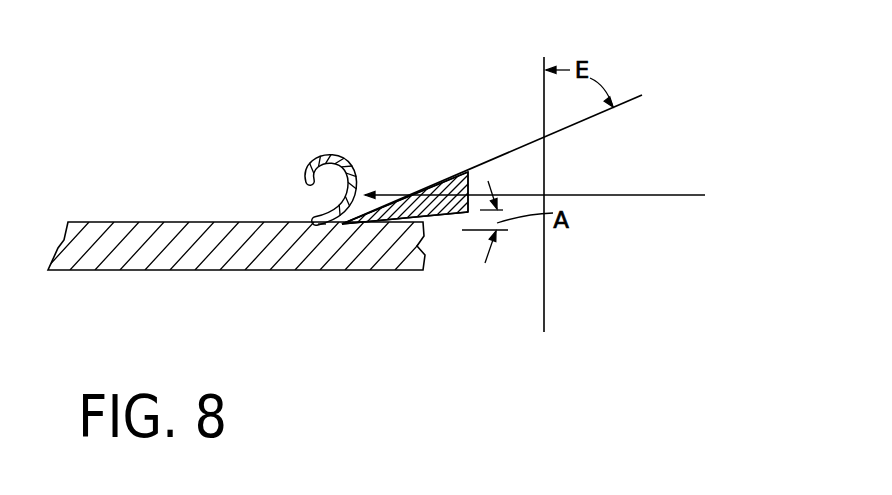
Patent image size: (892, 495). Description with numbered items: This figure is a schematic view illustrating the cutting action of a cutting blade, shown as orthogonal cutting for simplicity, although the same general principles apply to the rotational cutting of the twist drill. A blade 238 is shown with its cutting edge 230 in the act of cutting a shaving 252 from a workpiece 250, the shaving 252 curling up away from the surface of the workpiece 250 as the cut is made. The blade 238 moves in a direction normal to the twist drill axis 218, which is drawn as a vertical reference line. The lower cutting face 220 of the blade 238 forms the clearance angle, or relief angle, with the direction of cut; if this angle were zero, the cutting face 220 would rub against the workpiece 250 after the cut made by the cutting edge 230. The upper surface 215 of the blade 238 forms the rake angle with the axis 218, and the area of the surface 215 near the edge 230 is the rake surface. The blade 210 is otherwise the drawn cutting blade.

The blade 210 is at (375, 191).
The surface 215 is at (427, 187).
The twist drill axis 218 is at (541, 117).
The cutting face 220 is at (443, 216).
The cutting edge 230 is at (322, 232).
The blade 238 is at (441, 185).
The workpiece 250 is at (155, 230).
The shaving 252 is at (311, 163).